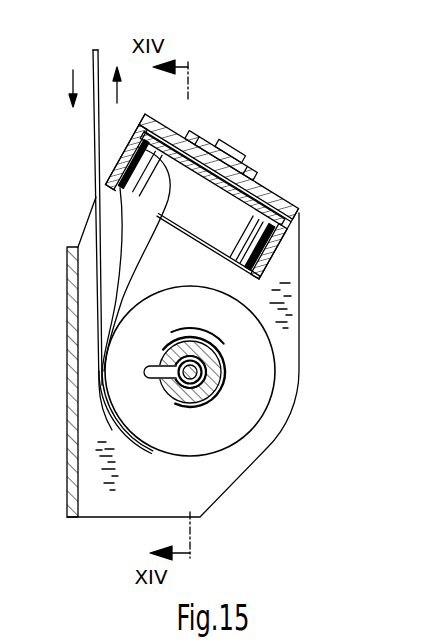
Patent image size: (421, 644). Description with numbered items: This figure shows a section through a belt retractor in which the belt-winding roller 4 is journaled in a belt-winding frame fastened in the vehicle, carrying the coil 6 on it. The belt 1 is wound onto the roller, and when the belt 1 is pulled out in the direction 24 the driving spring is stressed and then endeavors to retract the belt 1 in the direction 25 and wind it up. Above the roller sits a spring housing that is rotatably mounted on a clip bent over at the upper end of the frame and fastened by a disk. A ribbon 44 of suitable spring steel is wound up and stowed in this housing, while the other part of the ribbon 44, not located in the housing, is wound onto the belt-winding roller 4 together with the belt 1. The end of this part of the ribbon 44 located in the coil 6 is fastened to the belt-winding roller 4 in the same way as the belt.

The belt 1 is at (96, 135).
The belt-winding roller 4 is at (224, 344).
The coil 6 is at (243, 423).
The direction 24 is at (117, 95).
The direction 25 is at (72, 93).
The ribbon 44 is at (150, 216).